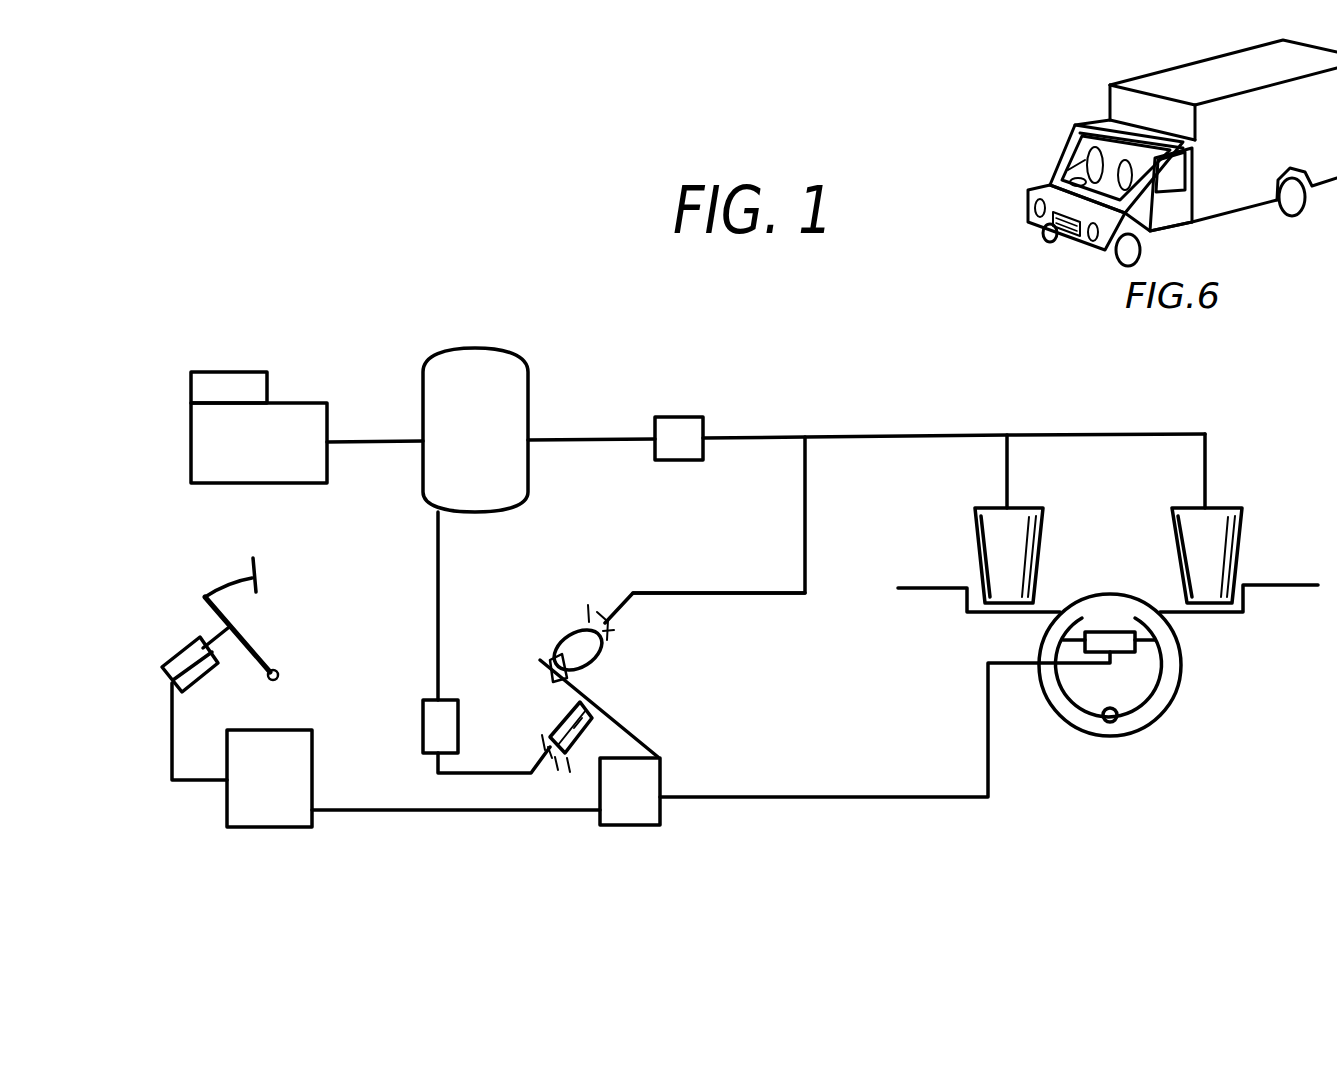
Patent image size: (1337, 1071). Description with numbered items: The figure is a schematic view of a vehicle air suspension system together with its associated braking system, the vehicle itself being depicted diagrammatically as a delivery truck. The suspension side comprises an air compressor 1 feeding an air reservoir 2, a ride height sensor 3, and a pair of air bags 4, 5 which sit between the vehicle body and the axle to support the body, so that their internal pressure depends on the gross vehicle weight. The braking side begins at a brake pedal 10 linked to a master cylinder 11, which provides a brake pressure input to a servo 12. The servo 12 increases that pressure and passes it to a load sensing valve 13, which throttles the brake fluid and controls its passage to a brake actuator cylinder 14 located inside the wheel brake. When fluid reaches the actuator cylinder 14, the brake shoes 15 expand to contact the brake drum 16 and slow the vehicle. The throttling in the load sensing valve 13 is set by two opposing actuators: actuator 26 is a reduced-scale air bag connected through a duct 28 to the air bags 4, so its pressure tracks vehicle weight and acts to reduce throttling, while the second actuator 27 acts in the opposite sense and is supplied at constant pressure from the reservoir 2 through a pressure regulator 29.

The air compressor 1 is at (284, 403).
The air reservoir 2 is at (478, 348).
The ride height sensor 3 is at (675, 417).
The air bags 4 is at (975, 560).
The spray nozzle 5 is at (1210, 548).
The brake pedal 10 is at (212, 590).
The master cylinder 11 is at (170, 657).
The servo 12 is at (282, 827).
The load sensing valve 13 is at (648, 825).
The brake actuator cylinder 14 is at (1110, 632).
The brake shoes 15 is at (1165, 672).
The brake drum 16 is at (1160, 713).
The actuator 26 is at (597, 670).
The second actuator 27 is at (555, 728).
The duct 28 is at (693, 593).
The pressure regulator 29 is at (423, 730).